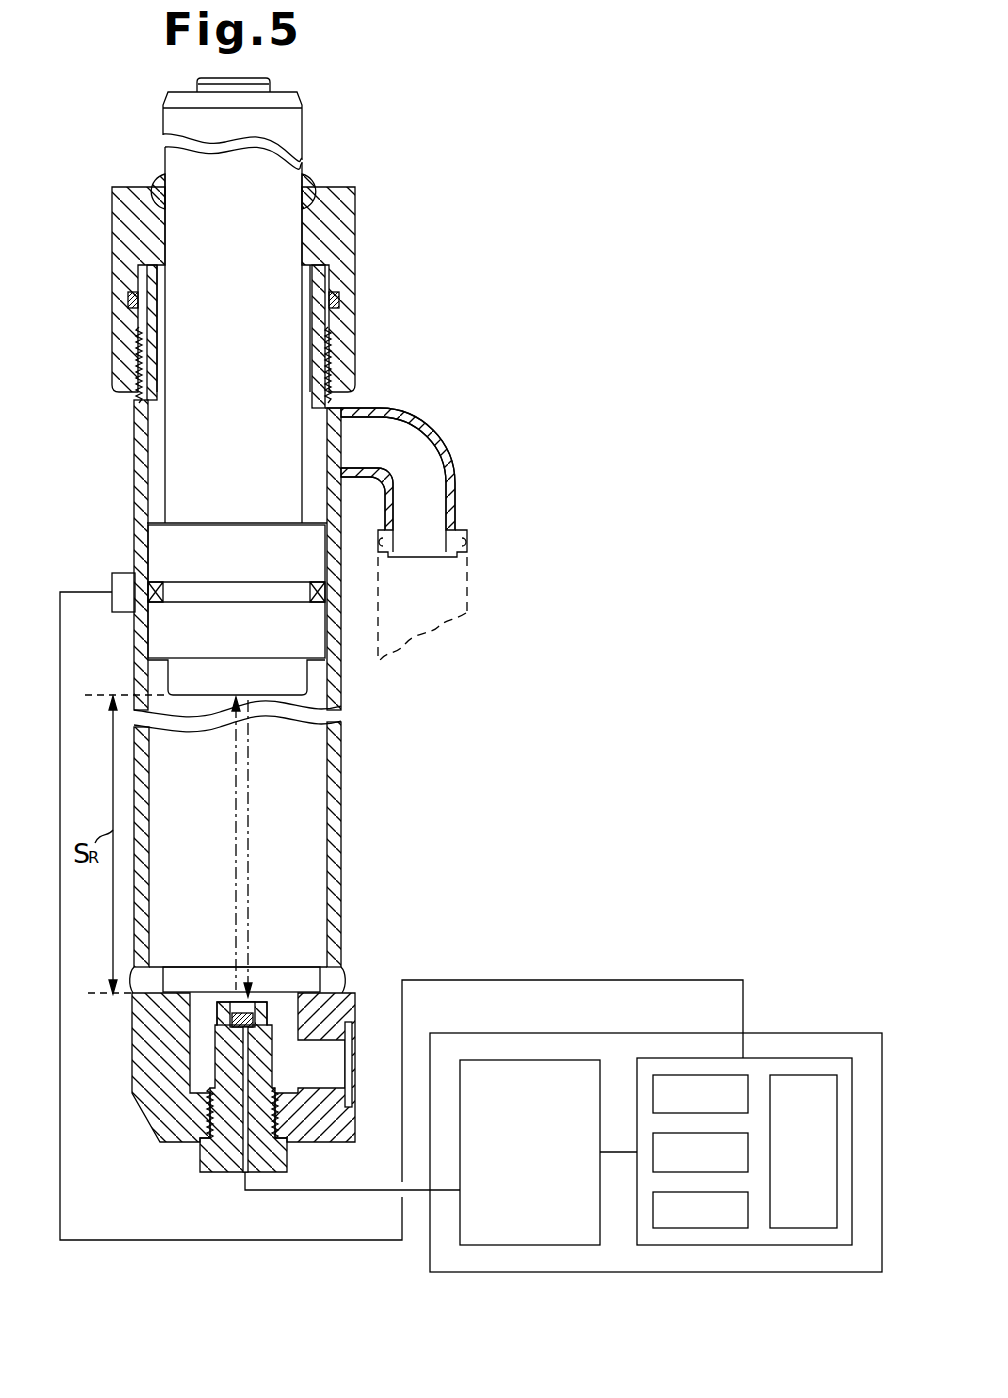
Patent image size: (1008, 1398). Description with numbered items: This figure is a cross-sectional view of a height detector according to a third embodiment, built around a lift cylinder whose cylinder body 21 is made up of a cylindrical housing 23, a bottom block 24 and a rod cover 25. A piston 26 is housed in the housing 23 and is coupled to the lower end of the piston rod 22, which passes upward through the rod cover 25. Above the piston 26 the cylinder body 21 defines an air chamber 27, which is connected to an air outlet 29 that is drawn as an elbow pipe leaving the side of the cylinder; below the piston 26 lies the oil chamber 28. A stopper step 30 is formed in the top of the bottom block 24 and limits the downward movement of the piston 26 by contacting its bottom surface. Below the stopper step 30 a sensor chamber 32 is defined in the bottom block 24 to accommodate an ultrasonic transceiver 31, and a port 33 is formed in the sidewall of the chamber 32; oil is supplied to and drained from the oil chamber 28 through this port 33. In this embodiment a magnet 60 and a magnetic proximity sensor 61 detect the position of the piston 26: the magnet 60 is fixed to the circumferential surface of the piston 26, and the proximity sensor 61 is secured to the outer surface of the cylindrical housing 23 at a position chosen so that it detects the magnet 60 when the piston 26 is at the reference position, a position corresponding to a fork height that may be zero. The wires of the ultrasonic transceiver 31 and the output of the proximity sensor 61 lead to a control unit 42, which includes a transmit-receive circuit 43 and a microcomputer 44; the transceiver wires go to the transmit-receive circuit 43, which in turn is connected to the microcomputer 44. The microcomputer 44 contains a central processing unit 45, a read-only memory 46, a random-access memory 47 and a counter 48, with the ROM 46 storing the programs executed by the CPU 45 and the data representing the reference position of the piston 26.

The piston rod 22 is at (302, 108).
The rod cover 25 is at (119, 251).
The air chamber 27 is at (152, 434).
The oil chamber 28 is at (327, 818).
The air outlet 29 is at (330, 420).
The piston 26 is at (317, 645).
The magnet 60 is at (163, 569).
The magnetic proximity sensor 61 is at (110, 573).
The cylinder body 21 is at (342, 740).
The cylindrical housing 23 is at (332, 893).
The stopper step 30 is at (181, 990).
The bottom block 24 is at (145, 1107).
The port 33 is at (352, 1100).
The ultrasonic transceiver 31 is at (222, 990).
The sensor chamber 32 is at (290, 990).
The control unit 42 is at (818, 1033).
The transmit-receive circuit 43 is at (565, 1245).
The microcomputer 44 is at (800, 1245).
The central processing unit 45 is at (837, 1118).
The read-only memory 46 is at (653, 1090).
The random-access memory 47 is at (653, 1160).
The counter 48 is at (700, 1228).